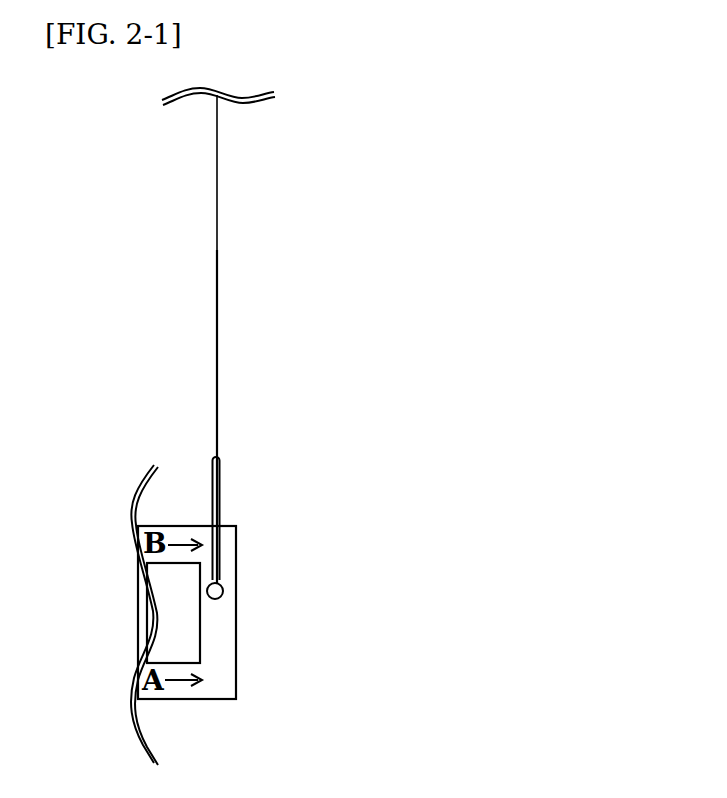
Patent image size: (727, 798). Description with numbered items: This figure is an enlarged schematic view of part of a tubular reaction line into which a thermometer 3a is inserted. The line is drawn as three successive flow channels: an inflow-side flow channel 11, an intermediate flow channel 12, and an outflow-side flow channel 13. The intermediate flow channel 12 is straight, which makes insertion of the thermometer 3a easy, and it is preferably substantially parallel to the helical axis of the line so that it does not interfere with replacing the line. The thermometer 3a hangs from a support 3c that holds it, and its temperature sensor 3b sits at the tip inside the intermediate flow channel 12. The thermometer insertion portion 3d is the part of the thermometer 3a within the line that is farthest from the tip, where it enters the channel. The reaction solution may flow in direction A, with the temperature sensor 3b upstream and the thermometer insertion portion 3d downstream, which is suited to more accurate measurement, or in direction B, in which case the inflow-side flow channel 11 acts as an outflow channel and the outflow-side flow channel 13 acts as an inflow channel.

The thermometer 3a is at (218, 497).
The temperature sensor 3b is at (222, 587).
The support 3c is at (217, 325).
The thermometer insertion portion 3d is at (212, 525).
The inflow-side flow channel 11 is at (175, 695).
The intermediate flow channel 12 is at (218, 633).
The outflow-side flow channel 13 is at (165, 563).